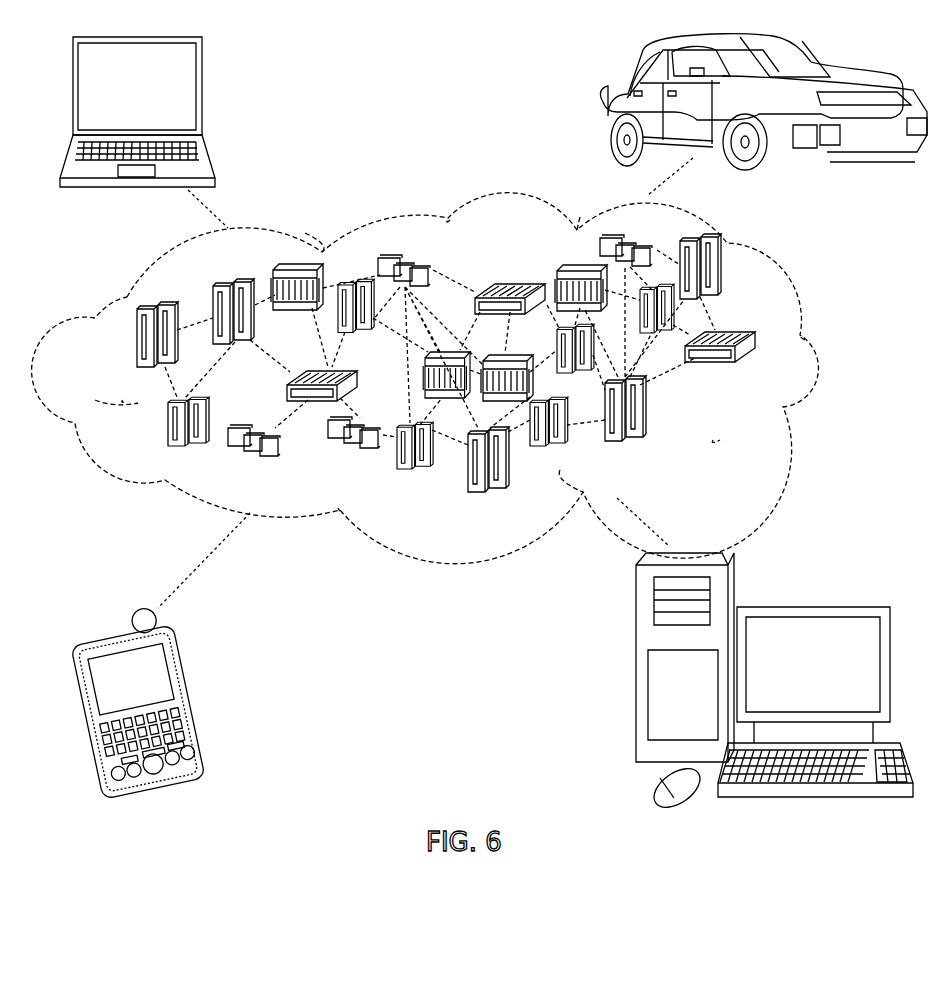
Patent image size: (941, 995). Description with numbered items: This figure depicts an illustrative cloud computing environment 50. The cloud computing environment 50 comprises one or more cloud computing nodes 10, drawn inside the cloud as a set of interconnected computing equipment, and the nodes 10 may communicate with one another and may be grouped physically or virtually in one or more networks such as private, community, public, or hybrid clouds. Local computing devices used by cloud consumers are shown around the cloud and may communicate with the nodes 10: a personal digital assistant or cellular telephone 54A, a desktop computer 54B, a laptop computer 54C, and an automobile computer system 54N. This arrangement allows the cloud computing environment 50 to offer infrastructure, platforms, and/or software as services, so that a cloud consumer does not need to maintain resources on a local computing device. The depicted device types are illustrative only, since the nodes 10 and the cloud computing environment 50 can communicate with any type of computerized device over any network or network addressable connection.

The laptop computer 54C is at (202, 92).
The automobile computer system 54N is at (610, 104).
The personal digital assistant or cellular telephone 54A is at (190, 689).
The desktop computer 54B is at (812, 607).
The cloud computing environment 50 is at (815, 340).
The cloud computing node 10 is at (767, 379).